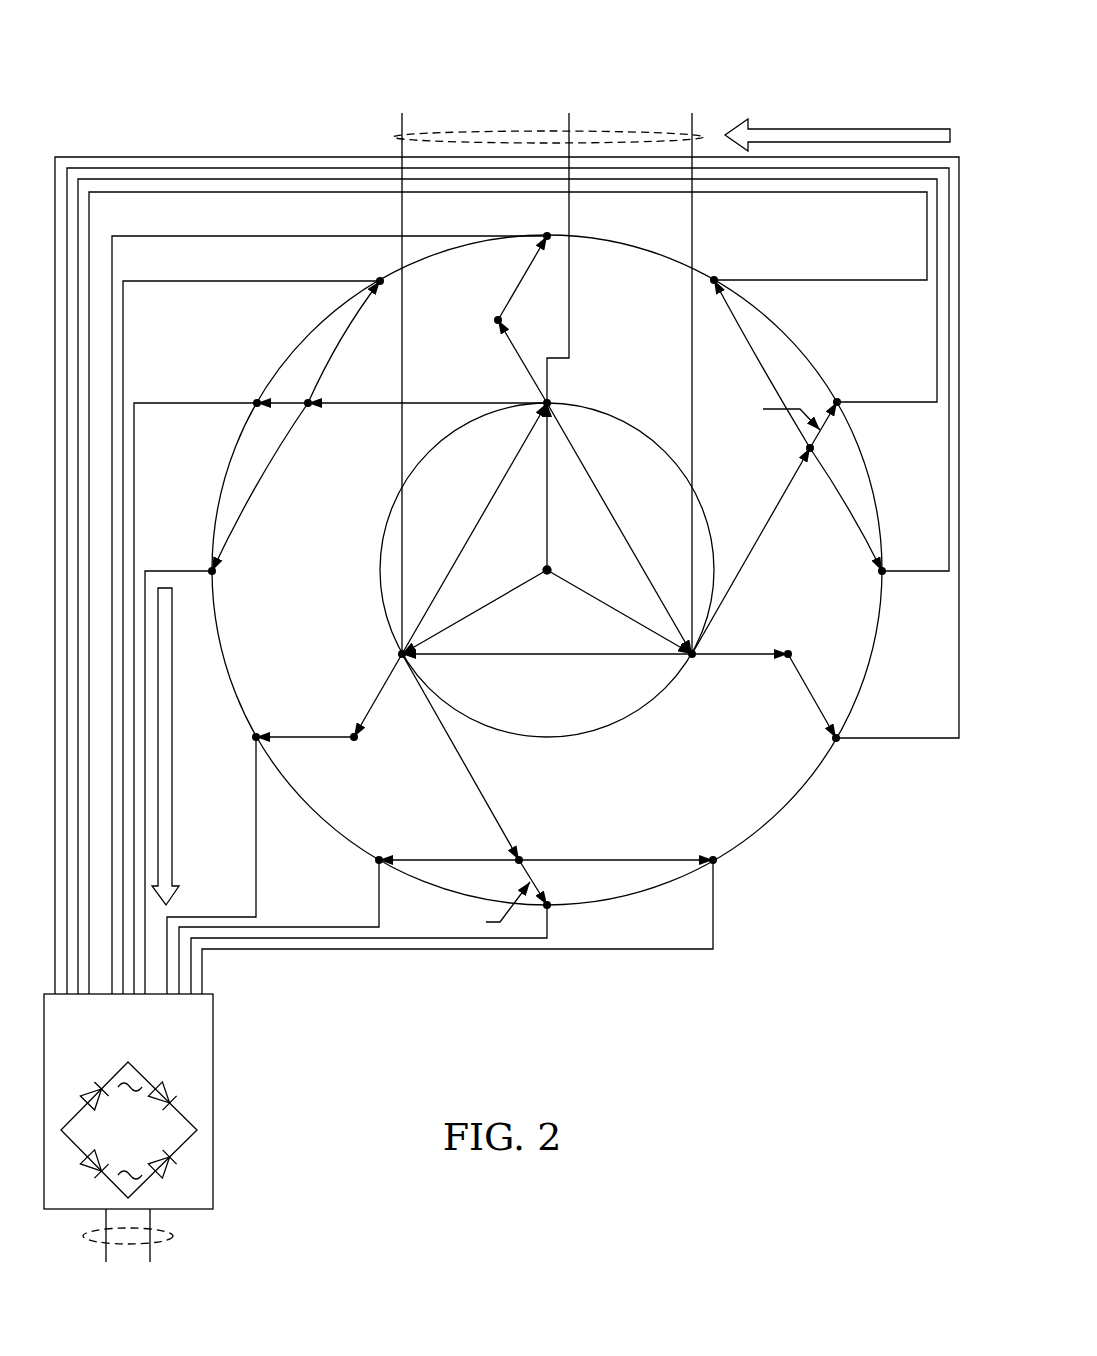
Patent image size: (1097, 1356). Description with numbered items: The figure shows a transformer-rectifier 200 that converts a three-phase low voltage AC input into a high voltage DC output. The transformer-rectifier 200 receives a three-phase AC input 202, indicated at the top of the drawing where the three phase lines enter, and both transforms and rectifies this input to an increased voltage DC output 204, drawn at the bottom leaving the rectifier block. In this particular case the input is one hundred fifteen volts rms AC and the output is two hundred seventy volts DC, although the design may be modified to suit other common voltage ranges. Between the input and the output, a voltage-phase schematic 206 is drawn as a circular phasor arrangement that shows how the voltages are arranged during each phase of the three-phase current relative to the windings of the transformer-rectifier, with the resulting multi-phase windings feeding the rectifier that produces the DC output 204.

The transformer-rectifier 200 is at (208, 64).
The 3-phase AC input 202 is at (398, 137).
The DC output 204 is at (174, 1237).
The voltage-phase schematic 206 is at (636, 246).